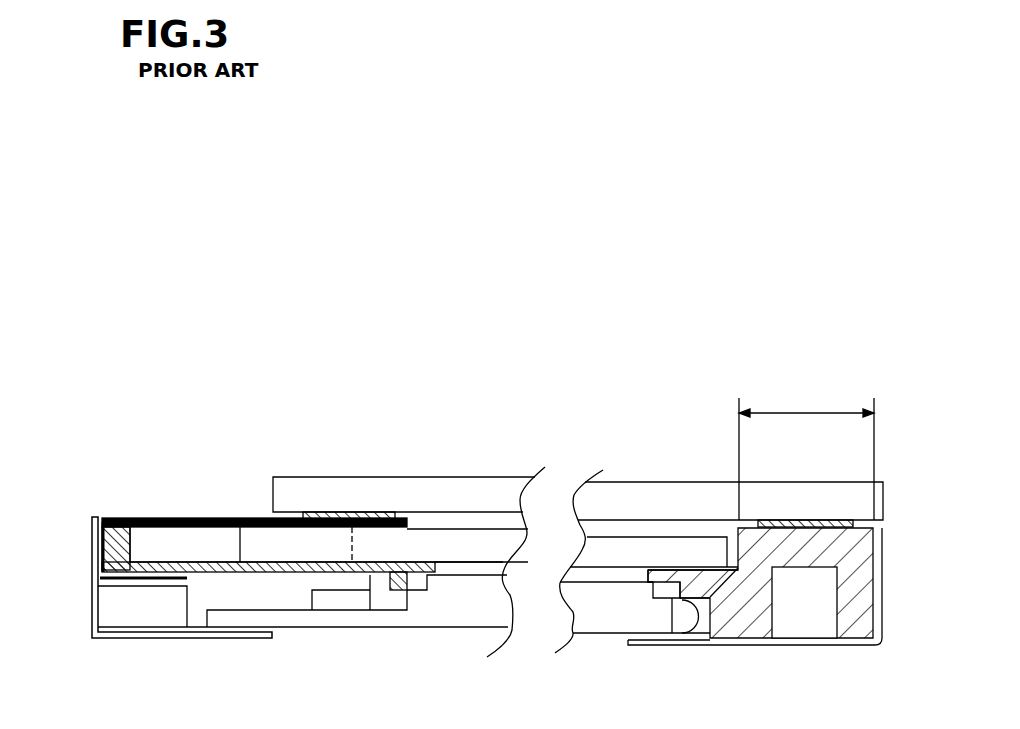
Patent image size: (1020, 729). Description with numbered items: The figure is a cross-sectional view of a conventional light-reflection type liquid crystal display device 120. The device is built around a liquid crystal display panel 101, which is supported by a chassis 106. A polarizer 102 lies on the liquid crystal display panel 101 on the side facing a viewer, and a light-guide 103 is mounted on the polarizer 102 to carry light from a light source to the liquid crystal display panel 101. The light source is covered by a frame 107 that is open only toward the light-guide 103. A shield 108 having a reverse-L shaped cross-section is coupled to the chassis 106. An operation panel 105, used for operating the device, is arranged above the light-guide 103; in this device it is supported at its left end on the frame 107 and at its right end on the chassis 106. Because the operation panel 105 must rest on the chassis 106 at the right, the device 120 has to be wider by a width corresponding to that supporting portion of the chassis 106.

The light-reflection type liquid crystal display device 120 is at (297, 303).
The liquid crystal display panel 101 is at (472, 614).
The polarizer 102 is at (420, 600).
The light-guide 103 is at (473, 547).
The operation panel 105 is at (448, 498).
The chassis 106 is at (858, 611).
The frame 107 is at (195, 518).
The shield 108 is at (87, 557).